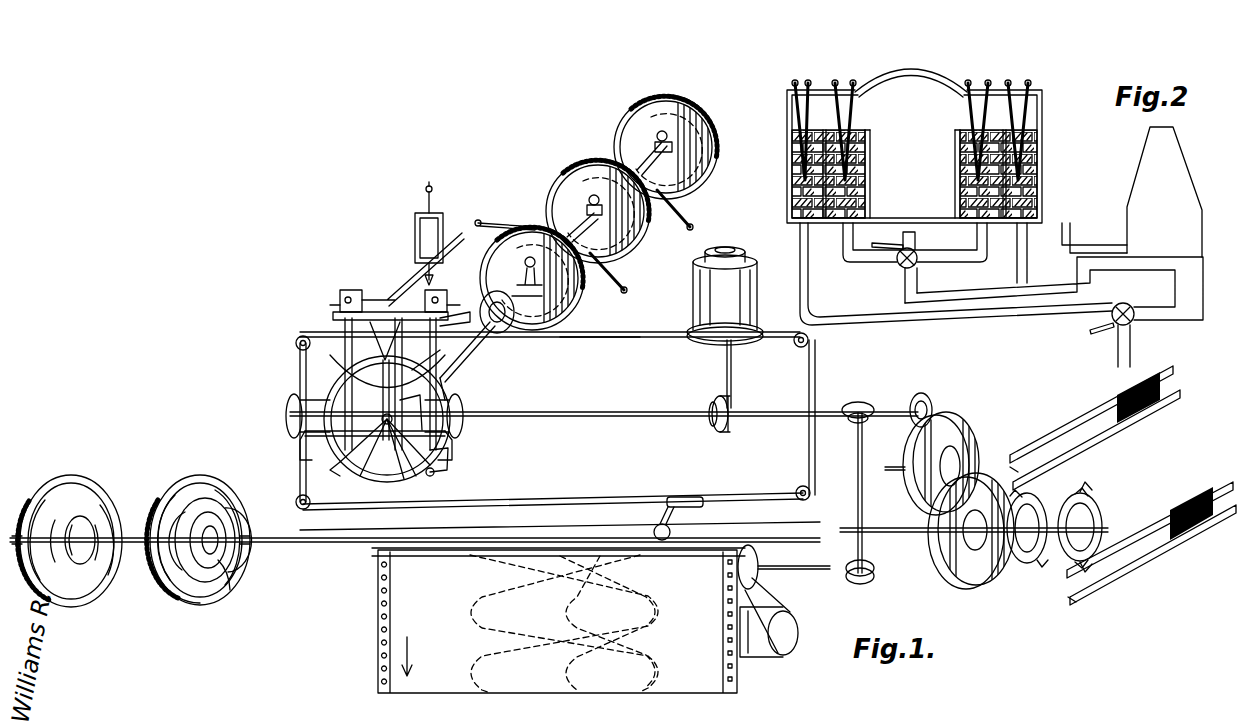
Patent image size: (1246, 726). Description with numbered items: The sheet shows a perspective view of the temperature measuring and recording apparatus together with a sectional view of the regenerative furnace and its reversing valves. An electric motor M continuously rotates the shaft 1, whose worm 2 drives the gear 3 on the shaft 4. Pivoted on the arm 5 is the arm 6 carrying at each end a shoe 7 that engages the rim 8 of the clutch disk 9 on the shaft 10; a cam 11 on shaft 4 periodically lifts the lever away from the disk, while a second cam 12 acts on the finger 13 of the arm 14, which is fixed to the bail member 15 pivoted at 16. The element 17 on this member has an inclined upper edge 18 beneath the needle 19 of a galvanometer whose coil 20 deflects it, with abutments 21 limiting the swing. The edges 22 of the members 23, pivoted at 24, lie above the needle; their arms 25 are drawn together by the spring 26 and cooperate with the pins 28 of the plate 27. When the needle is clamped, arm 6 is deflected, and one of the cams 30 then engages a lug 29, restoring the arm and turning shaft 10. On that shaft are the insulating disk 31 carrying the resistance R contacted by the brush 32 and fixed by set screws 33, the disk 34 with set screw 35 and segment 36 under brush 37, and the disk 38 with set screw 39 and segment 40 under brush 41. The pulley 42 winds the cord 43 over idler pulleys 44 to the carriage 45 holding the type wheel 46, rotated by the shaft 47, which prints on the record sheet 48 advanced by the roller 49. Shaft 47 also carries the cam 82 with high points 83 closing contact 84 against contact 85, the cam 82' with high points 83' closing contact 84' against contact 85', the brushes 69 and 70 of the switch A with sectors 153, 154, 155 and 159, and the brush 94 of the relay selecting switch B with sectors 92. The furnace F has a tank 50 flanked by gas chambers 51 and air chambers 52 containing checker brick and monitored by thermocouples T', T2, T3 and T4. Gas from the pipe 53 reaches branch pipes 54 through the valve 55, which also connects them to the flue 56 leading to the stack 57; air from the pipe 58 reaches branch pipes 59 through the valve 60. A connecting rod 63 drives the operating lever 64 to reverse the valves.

In FIG. 1, the shaft 1 is at (727, 364).
In FIG. 1, the worm 2 is at (732, 405).
In FIG. 1, the gear 3 is at (718, 428).
In FIG. 1, the shaft 4 is at (655, 417).
In FIG. 1, the arm 5 is at (384, 385).
In FIG. 1, the arm 6 is at (338, 470).
In FIG. 1, the shoe 7 is at (447, 434).
In FIG. 1, the rim 8 is at (433, 474).
In FIG. 1, the clutch disk 9 is at (416, 477).
In FIG. 1, the shaft 10 is at (472, 348).
In FIG. 1, the cam 11 is at (384, 415).
In FIG. 1, the second cam 12 is at (417, 403).
In FIG. 1, the finger 13 is at (449, 458).
In FIG. 1, the arm 14 is at (412, 368).
In FIG. 1, the bail member 15 is at (456, 317).
In FIG. 1, the pivot 16 is at (490, 308).
In FIG. 1, the element 17 is at (363, 300).
In FIG. 1, the upper edge 18 is at (420, 300).
In FIG. 1, the needle or pointer 19 is at (426, 272).
In FIG. 1, the movable element or coil 20 is at (443, 225).
In FIG. 1, the abutments 21 is at (380, 300).
In FIG. 1, the edges 22 is at (340, 303).
In FIG. 1, the members 23 is at (353, 290).
In FIG. 1, the pivots 24 is at (340, 295).
In FIG. 1, the arms 25 is at (350, 360).
In FIG. 1, the spring 26 is at (340, 320).
In FIG. 1, the plate 27 is at (385, 482).
In FIG. 1, the pins 28 is at (404, 480).
In FIG. 1, the lugs 29 is at (300, 452).
In FIG. 1, the cams 30 is at (290, 402).
In FIG. 1, the disk 31 is at (563, 312).
In FIG. 1, the brush or contact 32 is at (526, 224).
In FIG. 1, the set screws 33 is at (528, 267).
In FIG. 1, the second disk 34 is at (575, 170).
In FIG. 1, the set screw 35 is at (595, 207).
In FIG. 1, the contact segment 36 is at (583, 204).
In FIG. 1, the brush or contact 37 is at (615, 274).
In FIG. 1, the third disk 38 is at (702, 112).
In FIG. 1, the set screw 39 is at (667, 125).
In FIG. 1, the contact segment 40 is at (655, 146).
In FIG. 1, the brush or contact 41 is at (687, 212).
In FIG. 1, the pulley 42 is at (510, 325).
In FIG. 1, the cord 43 is at (624, 338).
In FIG. 1, the idler pulleys 44 is at (297, 340).
In FIG. 1, the carriage 45 is at (688, 497).
In FIG. 1, the recorder type wheel 46 is at (654, 528).
In FIG. 1, the shaft 47 is at (415, 523).
In FIG. 1, the record sheet 48 is at (758, 670).
In FIG. 1, the roller 49 is at (760, 562).
In FIG. 2, the tank 50 is at (918, 150).
In FIG. 2, the gas regenerative chamber 51 is at (868, 132).
In FIG. 2, the air regenerative chamber 52 is at (795, 136).
In FIG. 2, the gas supply pipe 53 is at (916, 240).
In FIG. 2, the branch gas pipes 54 is at (866, 263).
In FIG. 2, the gas valve 55 is at (918, 268).
In FIG. 2, the flue 56 is at (1000, 280).
In FIG. 2, the stack or chimney 57 is at (1135, 162).
In FIG. 2, the air supply pipe 58 is at (1118, 365).
In FIG. 2, the branch air pipes 59 is at (810, 296).
In FIG. 2, the air valve 60 is at (1130, 309).
In FIG. 2, the connecting rod 63 is at (885, 243).
In FIG. 2, the valve operating arm or lever 64 is at (904, 270).
In FIG. 1, the switch contact 69 is at (215, 490).
In FIG. 1, the switch contact 70 is at (188, 500).
In FIG. 1, the cam 82 is at (1023, 543).
In FIG. 1, the cam 82' is at (1107, 521).
In FIG. 1, the high points 83 is at (974, 491).
In FIG. 1, the high points 83' is at (1097, 548).
In FIG. 1, the contact 84 is at (1095, 428).
In FIG. 1, the contact 84' is at (1151, 542).
In FIG. 1, the contact 85 is at (1038, 438).
In FIG. 1, the contact 85' is at (1137, 581).
In FIG. 1, the contact sectors 92 is at (70, 490).
In FIG. 1, the brush 94 is at (88, 505).
In FIG. 1, the switch sector 153 is at (230, 500).
In FIG. 1, the switch sector 154 is at (195, 603).
In FIG. 1, the switch sector 155 is at (190, 500).
In FIG. 1, the switch sector 159 is at (230, 595).
In FIG. 1, the switch A is at (240, 575).
In FIG. 1, the relay selecting switch B is at (74, 605).
In FIG. 2, the regenerative furnace F is at (900, 72).
In FIG. 1, the source of power M is at (695, 292).
In FIG. 1, the resistance conductor R is at (575, 295).
In FIG. 2, the thermo couple T' is at (786, 122).
In FIG. 2, the thermo couple T2 is at (838, 88).
In FIG. 2, the thermo couple T3 is at (972, 88).
In FIG. 2, the thermo couple T4 is at (1030, 90).